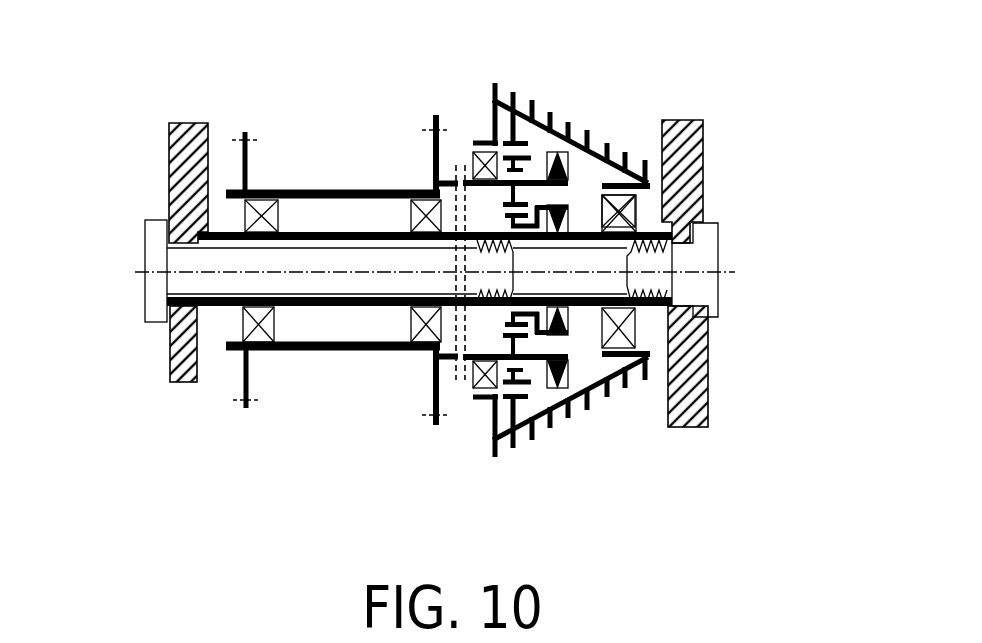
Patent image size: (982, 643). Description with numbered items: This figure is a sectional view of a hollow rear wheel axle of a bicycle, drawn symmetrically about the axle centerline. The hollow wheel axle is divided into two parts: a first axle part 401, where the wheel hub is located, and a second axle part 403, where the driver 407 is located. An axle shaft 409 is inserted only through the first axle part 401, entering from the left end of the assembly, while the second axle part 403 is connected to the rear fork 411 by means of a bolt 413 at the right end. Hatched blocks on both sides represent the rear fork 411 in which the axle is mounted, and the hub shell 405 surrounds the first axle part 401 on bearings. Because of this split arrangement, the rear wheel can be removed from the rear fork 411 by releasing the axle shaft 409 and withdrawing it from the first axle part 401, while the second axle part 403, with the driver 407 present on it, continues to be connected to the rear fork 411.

The first axle part 401 is at (342, 307).
The second axle part 403 is at (582, 305).
The hub shell 405 is at (342, 190).
The driver 407 is at (581, 160).
The axle shaft 409 is at (158, 253).
The rear fork 411 is at (175, 127).
The bolt 413 is at (702, 253).